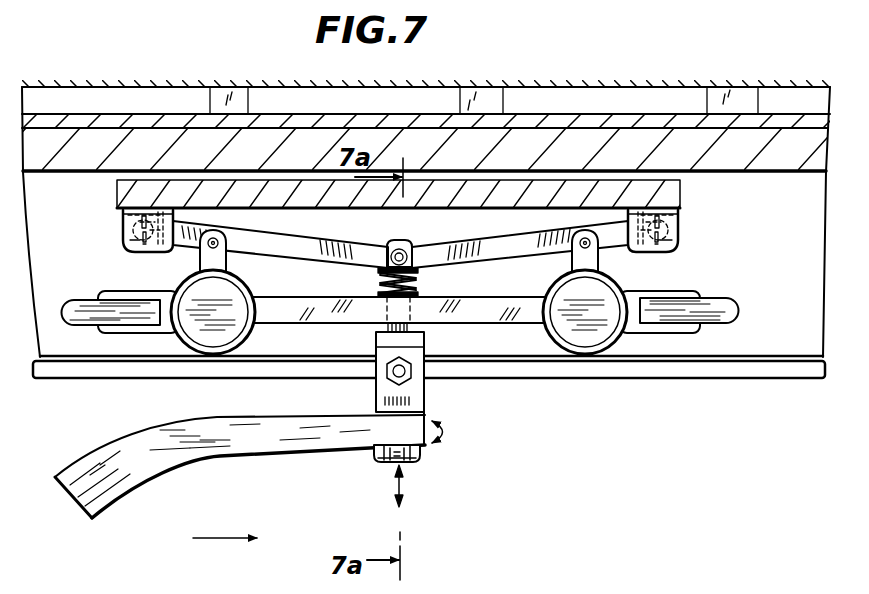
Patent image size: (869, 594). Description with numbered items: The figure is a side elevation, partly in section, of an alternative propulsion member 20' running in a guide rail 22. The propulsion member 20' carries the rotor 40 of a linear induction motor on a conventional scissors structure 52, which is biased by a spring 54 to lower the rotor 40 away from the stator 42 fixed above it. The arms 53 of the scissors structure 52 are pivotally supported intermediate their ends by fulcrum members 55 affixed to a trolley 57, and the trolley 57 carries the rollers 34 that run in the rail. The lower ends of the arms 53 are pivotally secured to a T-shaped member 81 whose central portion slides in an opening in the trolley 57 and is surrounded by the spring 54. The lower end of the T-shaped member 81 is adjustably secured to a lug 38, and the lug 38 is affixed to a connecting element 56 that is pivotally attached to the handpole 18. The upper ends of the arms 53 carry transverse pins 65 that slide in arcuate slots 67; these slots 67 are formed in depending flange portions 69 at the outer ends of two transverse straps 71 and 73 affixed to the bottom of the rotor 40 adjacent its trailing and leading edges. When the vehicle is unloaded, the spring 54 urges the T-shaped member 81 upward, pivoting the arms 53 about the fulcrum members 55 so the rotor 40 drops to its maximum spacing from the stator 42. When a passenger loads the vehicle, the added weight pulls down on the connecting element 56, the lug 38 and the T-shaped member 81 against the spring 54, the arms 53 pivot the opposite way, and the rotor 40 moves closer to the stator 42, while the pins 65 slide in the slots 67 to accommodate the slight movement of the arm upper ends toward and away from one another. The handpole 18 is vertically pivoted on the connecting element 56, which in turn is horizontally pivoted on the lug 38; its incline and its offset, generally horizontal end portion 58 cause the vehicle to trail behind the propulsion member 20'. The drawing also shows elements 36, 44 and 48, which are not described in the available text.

The handpole 18 is at (218, 458).
The propulsion member 20' is at (725, 243).
The guide rail 22 is at (538, 116).
The rollers 34 is at (185, 286).
The shaft 36 is at (76, 300).
The lug 38 is at (425, 390).
The rotor 40 is at (117, 200).
The stator 42 is at (720, 173).
The ground surface 44 is at (634, 86).
The floor plank 48 is at (250, 102).
The scissors structure 52 is at (441, 240).
The arms 53 is at (340, 258).
The spring 54 is at (417, 278).
The fulcrum members 55 is at (226, 250).
The connecting element 56 is at (425, 410).
The trolley 57 is at (302, 310).
The offset horizontal end portion 58 is at (272, 415).
The transverse pins 65 is at (147, 245).
The arcuate slots 67 is at (141, 248).
The depending flange portions 69 is at (125, 238).
The transverse strap 71 is at (123, 220).
The transverse strap 73 is at (678, 228).
The T-shaped member 81 is at (379, 331).